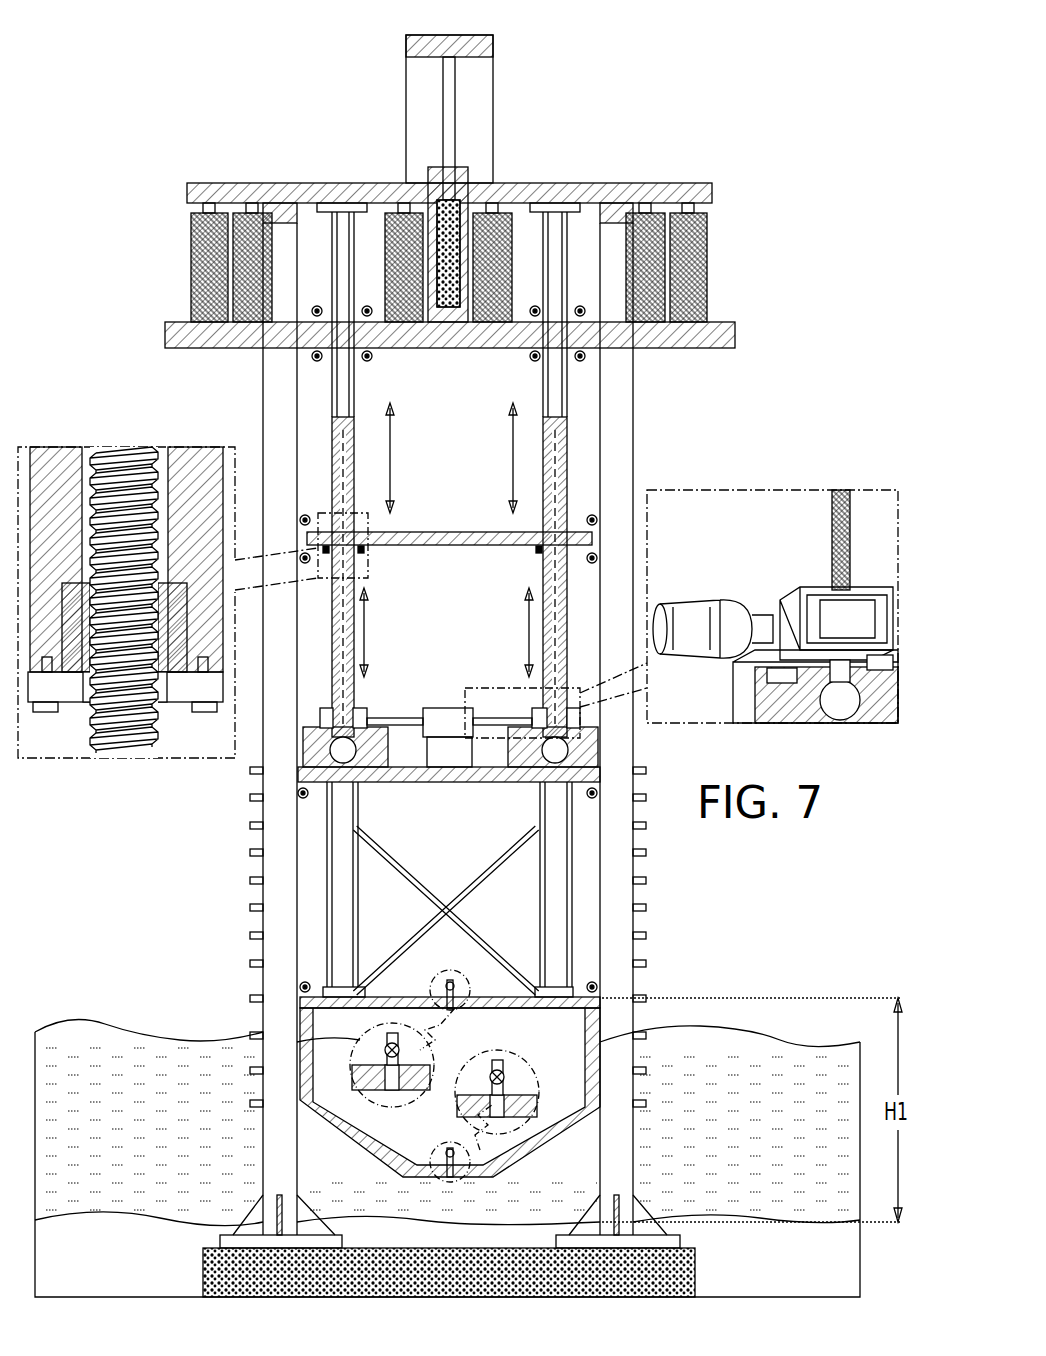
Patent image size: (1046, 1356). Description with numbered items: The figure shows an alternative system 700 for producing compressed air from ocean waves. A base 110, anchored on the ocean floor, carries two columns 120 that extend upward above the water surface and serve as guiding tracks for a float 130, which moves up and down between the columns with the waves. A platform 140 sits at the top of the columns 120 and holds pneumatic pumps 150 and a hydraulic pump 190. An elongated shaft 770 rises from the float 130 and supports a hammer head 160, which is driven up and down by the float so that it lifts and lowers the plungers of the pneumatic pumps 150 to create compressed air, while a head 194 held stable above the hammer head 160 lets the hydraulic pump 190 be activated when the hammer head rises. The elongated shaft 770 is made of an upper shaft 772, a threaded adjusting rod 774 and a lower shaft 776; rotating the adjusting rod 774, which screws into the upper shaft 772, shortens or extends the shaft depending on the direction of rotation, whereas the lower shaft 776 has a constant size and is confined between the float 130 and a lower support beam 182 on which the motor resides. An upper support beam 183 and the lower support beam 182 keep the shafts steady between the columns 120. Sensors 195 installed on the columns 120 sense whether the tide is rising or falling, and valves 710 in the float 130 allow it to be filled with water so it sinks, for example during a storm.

The system 700 is at (226, 72).
The head 194 is at (489, 48).
The hydraulic pump 190 is at (445, 218).
The hammer head 160 is at (712, 192).
The pneumatic pumps 150 is at (630, 282).
The platform 140 is at (735, 336).
The columns 120 is at (263, 403).
The elongated shaft 770 is at (583, 471).
The upper shaft 772 is at (540, 393).
The upper support beam 183 is at (430, 532).
The adjusting rod 774 is at (548, 590).
The lower support beam 182 is at (428, 771).
The lower shaft 776 is at (537, 826).
The sensors 195 is at (250, 965).
The valves 710 is at (352, 1080).
The float 130 is at (573, 1048).
The base 110 is at (452, 1291).